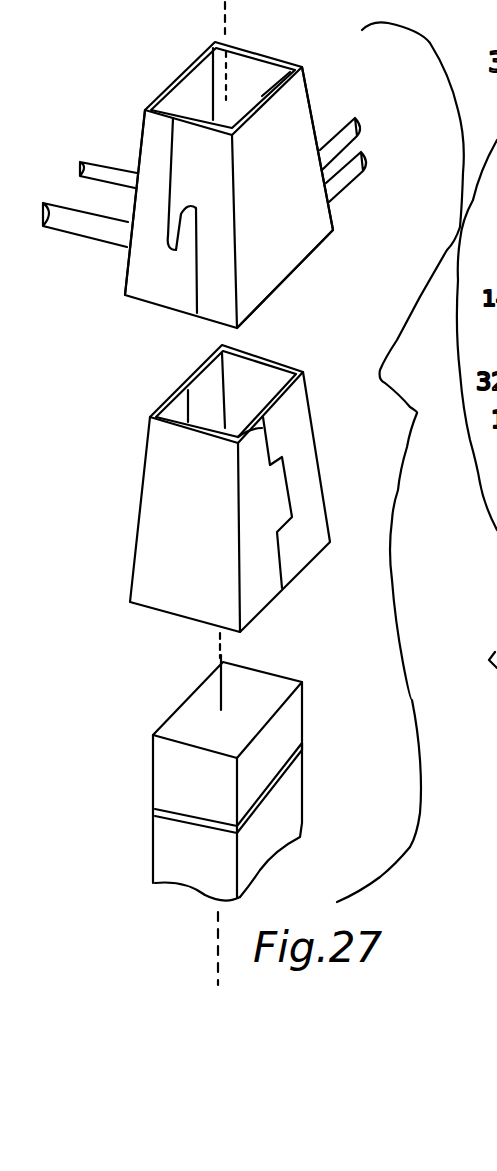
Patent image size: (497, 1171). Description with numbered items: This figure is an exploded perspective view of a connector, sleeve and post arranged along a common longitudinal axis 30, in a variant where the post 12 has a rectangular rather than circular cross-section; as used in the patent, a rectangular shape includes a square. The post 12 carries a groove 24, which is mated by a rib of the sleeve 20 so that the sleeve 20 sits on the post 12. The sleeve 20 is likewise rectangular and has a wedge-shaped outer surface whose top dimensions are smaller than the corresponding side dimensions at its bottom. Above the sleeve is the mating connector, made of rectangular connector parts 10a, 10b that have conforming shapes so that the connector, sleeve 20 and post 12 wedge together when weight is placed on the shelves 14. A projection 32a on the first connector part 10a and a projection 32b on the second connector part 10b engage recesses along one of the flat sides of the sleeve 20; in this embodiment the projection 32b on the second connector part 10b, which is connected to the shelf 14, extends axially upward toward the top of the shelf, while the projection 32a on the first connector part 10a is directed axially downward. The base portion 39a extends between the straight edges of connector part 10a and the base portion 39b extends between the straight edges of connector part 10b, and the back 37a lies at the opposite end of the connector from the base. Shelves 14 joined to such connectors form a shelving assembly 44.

The first connector part 10a is at (240, 190).
The second connector part 10b is at (133, 304).
The support post 12 is at (265, 781).
The shelf 14 is at (115, 152).
The sleeve 20 is at (312, 433).
The groove 24 is at (287, 767).
The longitudinal axis 30 is at (229, 72).
The projection on first connector part 32a is at (157, 222).
The projection on second connector part 32b is at (213, 212).
The back 37a is at (255, 104).
The base portion of first connector part 39a is at (277, 290).
The base portion of second connector part 39b is at (180, 66).
The shelving assembly 44 is at (368, 180).